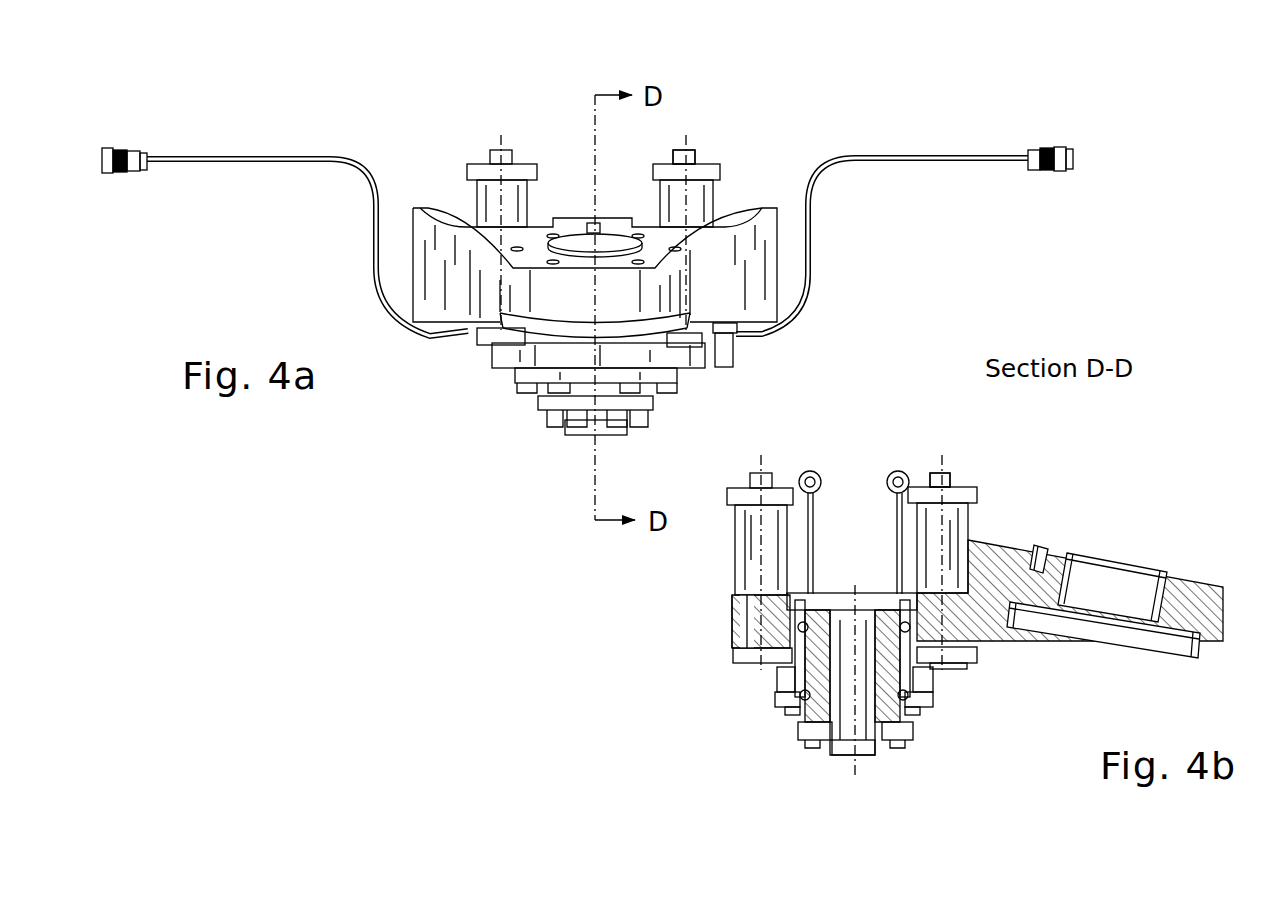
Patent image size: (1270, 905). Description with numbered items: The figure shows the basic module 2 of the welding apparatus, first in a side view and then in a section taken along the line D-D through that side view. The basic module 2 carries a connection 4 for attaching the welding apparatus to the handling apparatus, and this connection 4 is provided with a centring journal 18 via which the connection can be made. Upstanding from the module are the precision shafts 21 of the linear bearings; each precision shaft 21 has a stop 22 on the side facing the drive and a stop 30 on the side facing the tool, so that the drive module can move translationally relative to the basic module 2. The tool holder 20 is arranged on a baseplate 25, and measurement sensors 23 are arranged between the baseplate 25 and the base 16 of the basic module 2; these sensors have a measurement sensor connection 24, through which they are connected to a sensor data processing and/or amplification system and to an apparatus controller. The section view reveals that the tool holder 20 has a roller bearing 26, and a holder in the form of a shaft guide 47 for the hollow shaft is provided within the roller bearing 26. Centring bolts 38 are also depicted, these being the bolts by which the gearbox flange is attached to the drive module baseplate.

In FIG. 4a, the basic module 2 is at (774, 195).
In FIG. 4b, the basic module 2 is at (1027, 510).
In FIG. 4b, the connection 4 is at (1164, 552).
In FIG. 4a, the base 16 is at (748, 263).
In FIG. 4b, the base 16 is at (1003, 573).
In FIG. 4a, the centring journal 18 is at (567, 243).
In FIG. 4a, the tool holder 20 is at (526, 419).
In FIG. 4b, the tool holder 20 is at (824, 763).
In FIG. 4a, the precision shaft 21 is at (713, 190).
In FIG. 4b, the precision shaft 21 is at (968, 526).
In FIG. 4a, the stop 22 is at (656, 172).
In FIG. 4b, the stop 22 is at (957, 488).
In FIG. 4b, the measurement sensor 23 is at (940, 685).
In FIG. 4a, the measurement sensor connection 24 is at (117, 148).
In FIG. 4b, the measurement sensor connection 24 is at (896, 470).
In FIG. 4a, the baseplate 25 is at (490, 350).
In FIG. 4b, the baseplate 25 is at (780, 676).
In FIG. 4b, the roller bearing 26 is at (778, 712).
In FIG. 4a, the stop 30 is at (705, 328).
In FIG. 4b, the centring bolt 38 is at (968, 665).
In FIG. 4b, the shaft guide 47 is at (800, 735).